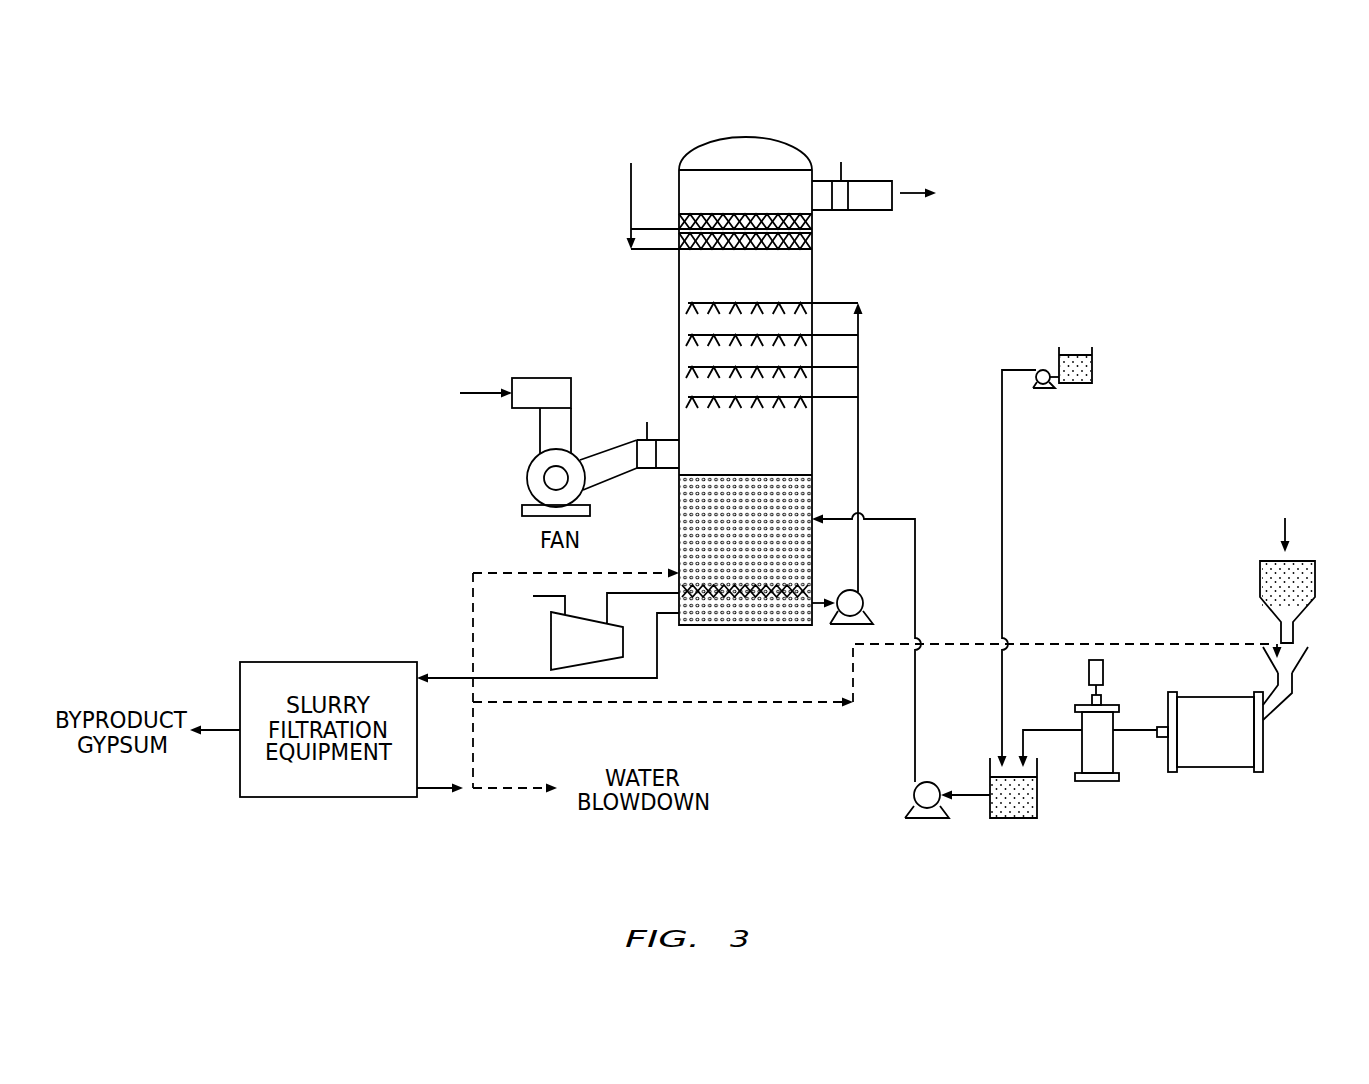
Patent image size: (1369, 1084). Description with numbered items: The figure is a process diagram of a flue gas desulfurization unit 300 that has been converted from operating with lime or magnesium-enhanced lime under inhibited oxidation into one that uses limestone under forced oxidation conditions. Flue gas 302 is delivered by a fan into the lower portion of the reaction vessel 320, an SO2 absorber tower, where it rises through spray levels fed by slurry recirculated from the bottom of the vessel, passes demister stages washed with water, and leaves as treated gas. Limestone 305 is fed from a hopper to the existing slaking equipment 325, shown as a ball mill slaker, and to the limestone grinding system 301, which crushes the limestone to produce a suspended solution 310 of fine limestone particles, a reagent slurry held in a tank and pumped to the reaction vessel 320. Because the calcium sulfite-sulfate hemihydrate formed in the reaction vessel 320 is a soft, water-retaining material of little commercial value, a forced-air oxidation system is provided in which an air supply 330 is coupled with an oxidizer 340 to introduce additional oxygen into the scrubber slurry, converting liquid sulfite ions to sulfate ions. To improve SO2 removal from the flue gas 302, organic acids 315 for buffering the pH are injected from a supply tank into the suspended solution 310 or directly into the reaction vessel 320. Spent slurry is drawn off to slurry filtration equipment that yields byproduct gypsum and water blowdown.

The unit 300 is at (576, 266).
The flue gas 302 is at (383, 382).
The reaction vessel 320 is at (670, 562).
The oxidizer 340 is at (837, 577).
The air supply 330 is at (550, 640).
The organic acids 315 is at (1068, 353).
The suspended solution 310 is at (1013, 818).
The limestone grinding system 301 is at (1114, 722).
The slaking equipment 325 is at (1263, 745).
The limestone 305 is at (1245, 520).